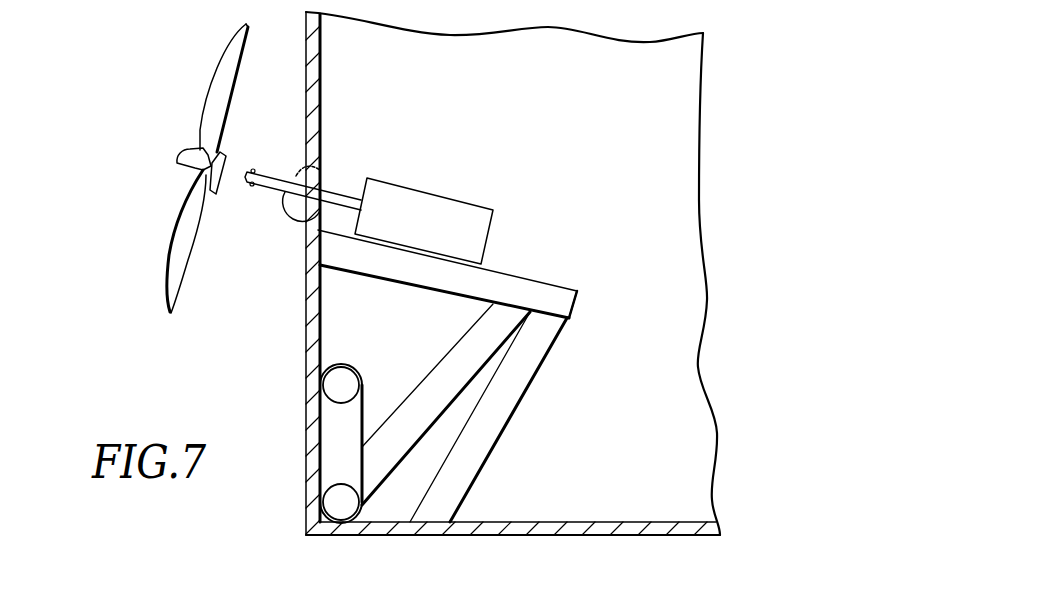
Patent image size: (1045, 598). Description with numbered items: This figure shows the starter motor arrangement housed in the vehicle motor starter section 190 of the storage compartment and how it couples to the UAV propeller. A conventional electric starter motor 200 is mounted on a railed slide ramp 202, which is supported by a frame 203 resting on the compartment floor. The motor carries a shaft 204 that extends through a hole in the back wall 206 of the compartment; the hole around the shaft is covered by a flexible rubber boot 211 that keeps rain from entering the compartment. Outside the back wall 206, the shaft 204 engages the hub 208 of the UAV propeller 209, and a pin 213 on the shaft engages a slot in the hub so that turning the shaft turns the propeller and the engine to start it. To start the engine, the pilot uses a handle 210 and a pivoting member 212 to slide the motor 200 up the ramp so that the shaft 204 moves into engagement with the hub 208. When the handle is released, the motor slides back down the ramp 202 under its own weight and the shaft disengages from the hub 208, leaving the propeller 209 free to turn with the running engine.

The vehicle motor starter section 190 is at (624, 118).
The electric starter motor 200 is at (424, 200).
The railed slide ramp 202 is at (517, 285).
The frame 203 is at (477, 455).
The shaft 204 is at (273, 186).
The back wall 206 is at (319, 57).
The hub 208 is at (175, 173).
The propeller 209 is at (212, 100).
The handle 210 is at (340, 368).
The flexible rubber boot 211 is at (293, 220).
The pivoting member 212 is at (450, 390).
The pin 213 is at (253, 169).